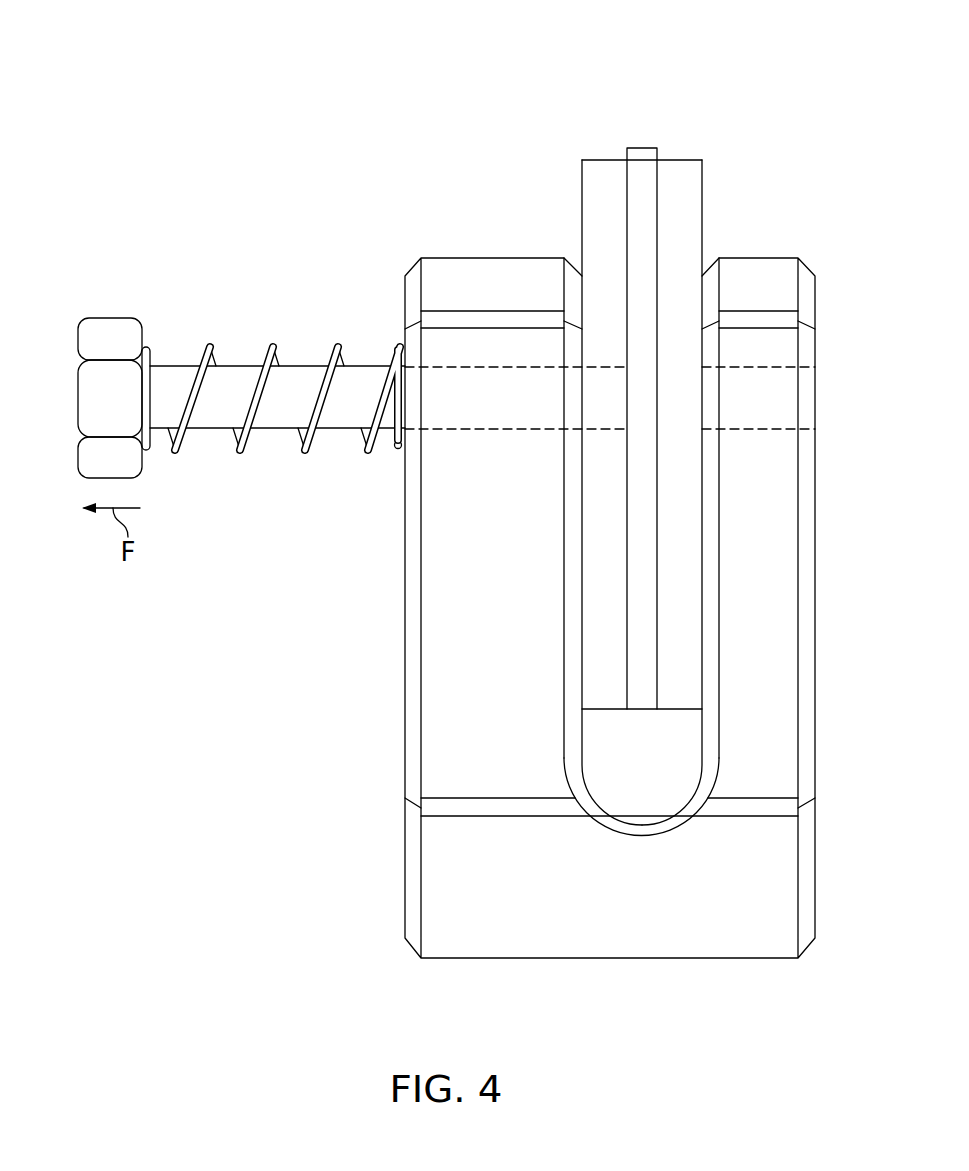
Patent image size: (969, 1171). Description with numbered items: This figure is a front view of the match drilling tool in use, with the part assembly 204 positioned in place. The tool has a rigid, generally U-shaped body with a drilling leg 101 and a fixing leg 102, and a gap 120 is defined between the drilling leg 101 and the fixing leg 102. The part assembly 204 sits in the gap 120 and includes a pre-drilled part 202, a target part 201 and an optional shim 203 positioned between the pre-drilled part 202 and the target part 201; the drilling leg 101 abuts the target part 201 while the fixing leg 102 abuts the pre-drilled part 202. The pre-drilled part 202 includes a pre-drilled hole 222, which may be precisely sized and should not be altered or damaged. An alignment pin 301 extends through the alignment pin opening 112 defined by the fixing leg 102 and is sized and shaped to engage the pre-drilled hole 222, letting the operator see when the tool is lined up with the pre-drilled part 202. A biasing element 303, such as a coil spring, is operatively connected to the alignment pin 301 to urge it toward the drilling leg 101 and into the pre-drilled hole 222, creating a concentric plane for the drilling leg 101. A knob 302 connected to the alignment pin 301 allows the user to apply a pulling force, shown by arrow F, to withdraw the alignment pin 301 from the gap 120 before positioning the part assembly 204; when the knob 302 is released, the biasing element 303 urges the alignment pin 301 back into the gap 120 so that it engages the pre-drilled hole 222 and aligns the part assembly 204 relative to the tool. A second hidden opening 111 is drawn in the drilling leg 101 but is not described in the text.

The drilling leg 101 is at (607, 608).
The fixing leg 102 is at (403, 300).
The threaded hole 111 is at (767, 430).
The alignment pin opening 112 is at (468, 430).
The gap 120 is at (641, 818).
The target part 201 is at (702, 187).
The pre-drilled part 202 is at (582, 187).
The shim 203 is at (608, 410).
The part assembly 204 is at (640, 430).
The pre-drilled hole 222 is at (600, 430).
The alignment pin 301 is at (238, 362).
The knob 302 is at (115, 318).
The biasing element 303 is at (240, 450).